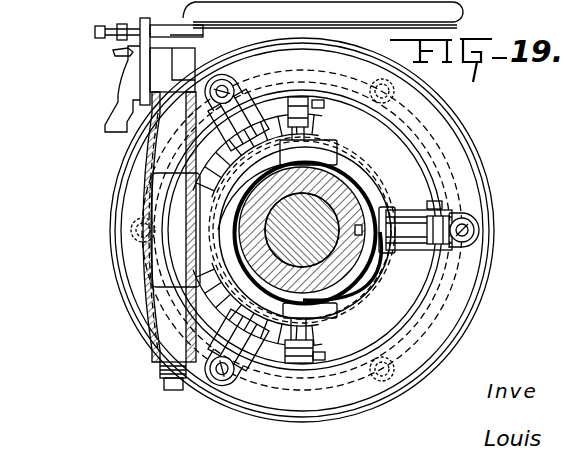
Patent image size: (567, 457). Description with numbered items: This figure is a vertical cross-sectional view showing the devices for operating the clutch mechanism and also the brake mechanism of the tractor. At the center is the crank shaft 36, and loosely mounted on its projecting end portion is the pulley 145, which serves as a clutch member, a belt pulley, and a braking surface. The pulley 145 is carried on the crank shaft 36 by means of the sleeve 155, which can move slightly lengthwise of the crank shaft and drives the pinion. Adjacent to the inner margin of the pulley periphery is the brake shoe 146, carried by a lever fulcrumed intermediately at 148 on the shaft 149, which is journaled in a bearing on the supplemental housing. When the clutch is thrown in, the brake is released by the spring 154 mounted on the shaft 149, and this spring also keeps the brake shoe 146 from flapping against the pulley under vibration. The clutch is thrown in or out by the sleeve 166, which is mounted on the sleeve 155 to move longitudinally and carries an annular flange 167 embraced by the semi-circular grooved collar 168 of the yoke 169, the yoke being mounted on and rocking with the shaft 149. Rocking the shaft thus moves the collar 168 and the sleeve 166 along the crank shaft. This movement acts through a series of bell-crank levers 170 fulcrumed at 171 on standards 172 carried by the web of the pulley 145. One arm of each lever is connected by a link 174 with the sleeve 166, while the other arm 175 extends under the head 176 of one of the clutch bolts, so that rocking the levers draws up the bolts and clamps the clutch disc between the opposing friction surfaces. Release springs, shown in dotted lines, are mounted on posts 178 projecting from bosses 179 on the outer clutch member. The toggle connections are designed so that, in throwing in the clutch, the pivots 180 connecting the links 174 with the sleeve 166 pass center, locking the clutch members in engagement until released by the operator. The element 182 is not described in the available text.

The crank shaft 36 is at (308, 208).
The pulley 145 is at (478, 290).
The brake shoe 146 is at (118, 153).
The fulcrum 148 is at (200, 70).
The shaft 149 is at (172, 322).
The spring 154 is at (122, 57).
The sleeve 155 is at (372, 172).
The sleeve 166 is at (348, 292).
The annular flange 167 is at (356, 285).
The semi-circular grooved collar 168 is at (328, 156).
The yoke 169 is at (176, 196).
The bell-crank levers 170 is at (436, 242).
The fulcrum 171 is at (322, 106).
The standards 172 is at (308, 100).
The link 174 is at (412, 238).
The arm 175 is at (218, 96).
The head 176 is at (240, 96).
The posts 178 is at (396, 86).
The bosses 179 is at (446, 108).
The pivots 180 is at (314, 146).
The operating rod 182 is at (323, 14).